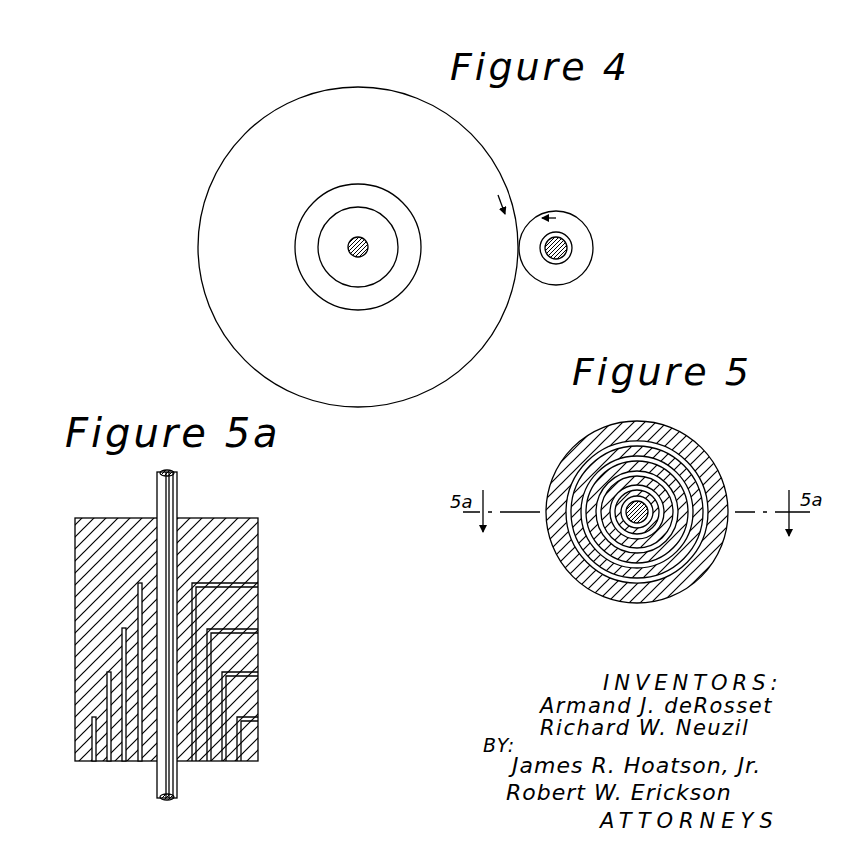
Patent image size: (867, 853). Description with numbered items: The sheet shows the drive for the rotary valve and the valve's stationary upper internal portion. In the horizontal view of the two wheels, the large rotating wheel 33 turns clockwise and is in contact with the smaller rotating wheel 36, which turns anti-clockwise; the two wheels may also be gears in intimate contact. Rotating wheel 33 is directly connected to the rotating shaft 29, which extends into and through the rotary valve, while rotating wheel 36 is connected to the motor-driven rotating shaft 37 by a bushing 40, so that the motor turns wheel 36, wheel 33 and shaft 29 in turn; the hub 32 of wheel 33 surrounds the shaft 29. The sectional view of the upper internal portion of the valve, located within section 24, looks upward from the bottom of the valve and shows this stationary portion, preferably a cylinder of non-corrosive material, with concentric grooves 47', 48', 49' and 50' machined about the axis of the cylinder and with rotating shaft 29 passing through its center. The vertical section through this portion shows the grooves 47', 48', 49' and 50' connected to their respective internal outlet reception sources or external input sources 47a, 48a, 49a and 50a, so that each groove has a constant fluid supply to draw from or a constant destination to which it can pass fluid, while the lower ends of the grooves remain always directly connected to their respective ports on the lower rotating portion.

In FIG. 4, the rotating wheel 33 is at (240, 138).
In FIG. 4, the hub 32 is at (334, 307).
In FIG. 4, the rotating shaft 29 is at (383, 230).
In FIG. 5, the rotating shaft 29 is at (652, 500).
In FIG. 5A, the rotating shaft 29 is at (177, 492).
In FIG. 4, the rotating wheel 36 is at (560, 285).
In FIG. 4, the rotating shaft 37 is at (562, 238).
In FIG. 4, the bushing 40 is at (572, 253).
In FIG. 5, the section of the valve 24 is at (710, 565).
In FIG. 5A, the section of the valve 24 is at (120, 518).
In FIG. 5, the concentric groove 47' is at (613, 562).
In FIG. 5A, the concentric groove 47' is at (64, 739).
In FIG. 5, the concentric groove 48' is at (613, 518).
In FIG. 5A, the concentric groove 48' is at (71, 716).
In FIG. 5, the concentric groove 49' is at (605, 502).
In FIG. 5A, the concentric groove 49' is at (79, 694).
In FIG. 5, the concentric groove 50' is at (624, 472).
In FIG. 5A, the concentric groove 50' is at (87, 672).
In FIG. 5A, the internal outlet reception source or external input source 47a is at (258, 717).
In FIG. 5A, the internal outlet reception source or external input source 48a is at (258, 672).
In FIG. 5A, the internal outlet reception source or external input source 49a is at (258, 629).
In FIG. 5A, the internal outlet reception source or external input source 50a is at (258, 583).